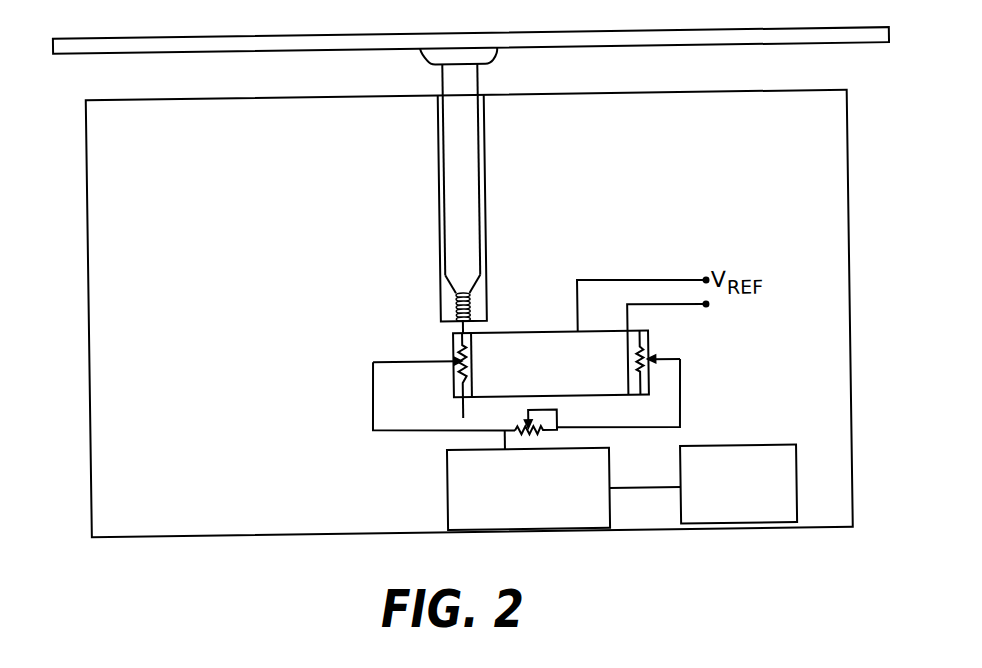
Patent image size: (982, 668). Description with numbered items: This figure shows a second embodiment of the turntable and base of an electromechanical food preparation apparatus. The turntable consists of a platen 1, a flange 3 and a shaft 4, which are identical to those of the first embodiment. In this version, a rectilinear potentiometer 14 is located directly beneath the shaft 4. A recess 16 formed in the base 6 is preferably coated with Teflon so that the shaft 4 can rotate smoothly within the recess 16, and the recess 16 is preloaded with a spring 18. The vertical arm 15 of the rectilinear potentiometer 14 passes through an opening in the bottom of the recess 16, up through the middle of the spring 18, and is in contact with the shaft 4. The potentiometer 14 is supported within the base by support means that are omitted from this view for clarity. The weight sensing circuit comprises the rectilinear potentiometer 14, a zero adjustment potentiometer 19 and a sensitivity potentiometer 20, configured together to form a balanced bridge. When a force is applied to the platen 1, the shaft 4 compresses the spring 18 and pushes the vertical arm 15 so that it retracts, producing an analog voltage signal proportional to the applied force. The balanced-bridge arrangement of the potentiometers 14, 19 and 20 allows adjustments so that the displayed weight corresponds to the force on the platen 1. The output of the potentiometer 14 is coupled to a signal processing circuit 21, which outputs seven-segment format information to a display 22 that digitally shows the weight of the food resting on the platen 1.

The platen 1 is at (640, 34).
The flange 3 is at (499, 53).
The shaft 4 is at (475, 213).
The base 6 is at (703, 93).
The rectilinear potentiometer 14 is at (466, 363).
The vertical arm 15 is at (465, 330).
The recess 16 is at (487, 302).
The spring 18 is at (457, 308).
The zero adjustment potentiometer 19 is at (652, 352).
The sensitivity potentiometer 20 is at (526, 421).
The signal processing circuit 21 is at (610, 468).
The display 22 is at (731, 447).